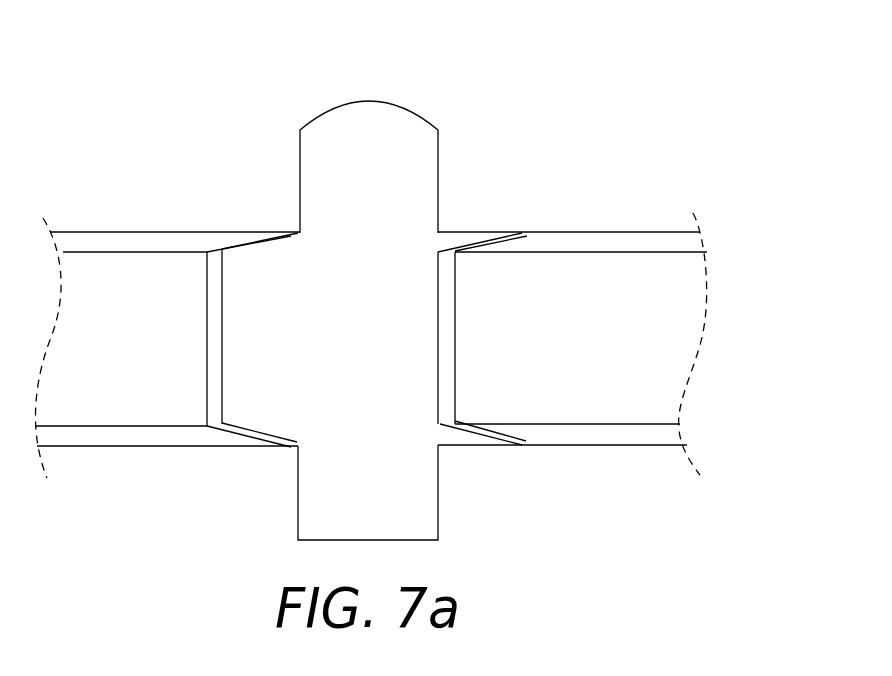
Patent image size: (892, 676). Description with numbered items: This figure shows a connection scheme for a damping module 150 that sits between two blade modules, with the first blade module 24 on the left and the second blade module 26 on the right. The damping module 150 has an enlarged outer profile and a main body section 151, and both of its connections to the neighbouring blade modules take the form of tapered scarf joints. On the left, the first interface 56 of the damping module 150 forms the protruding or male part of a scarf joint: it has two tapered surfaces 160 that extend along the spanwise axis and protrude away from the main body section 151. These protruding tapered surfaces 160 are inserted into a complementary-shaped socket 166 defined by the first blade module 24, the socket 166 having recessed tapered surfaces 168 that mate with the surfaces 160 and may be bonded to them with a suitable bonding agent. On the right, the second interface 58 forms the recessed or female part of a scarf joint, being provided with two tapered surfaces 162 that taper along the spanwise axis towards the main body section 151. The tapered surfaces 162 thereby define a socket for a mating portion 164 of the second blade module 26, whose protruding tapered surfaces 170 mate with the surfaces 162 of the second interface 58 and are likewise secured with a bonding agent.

The damping module 150 is at (447, 88).
The main body section 151 is at (375, 354).
The first blade module 24 is at (124, 230).
The second blade module 26 is at (668, 230).
The socket 166 is at (162, 354).
The mating portion 164 is at (527, 344).
The tapered surfaces 160 is at (236, 245).
The recessed tapered surfaces 168 is at (286, 236).
The protruding tapered surfaces 170 is at (469, 243).
The tapered surfaces 162 is at (502, 237).
The first interface 56 is at (268, 263).
The second interface 58 is at (427, 258).